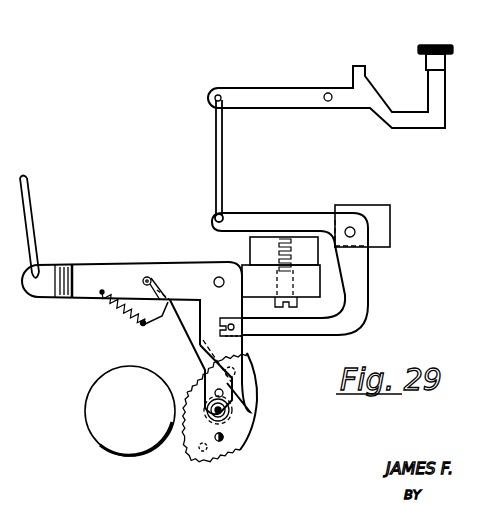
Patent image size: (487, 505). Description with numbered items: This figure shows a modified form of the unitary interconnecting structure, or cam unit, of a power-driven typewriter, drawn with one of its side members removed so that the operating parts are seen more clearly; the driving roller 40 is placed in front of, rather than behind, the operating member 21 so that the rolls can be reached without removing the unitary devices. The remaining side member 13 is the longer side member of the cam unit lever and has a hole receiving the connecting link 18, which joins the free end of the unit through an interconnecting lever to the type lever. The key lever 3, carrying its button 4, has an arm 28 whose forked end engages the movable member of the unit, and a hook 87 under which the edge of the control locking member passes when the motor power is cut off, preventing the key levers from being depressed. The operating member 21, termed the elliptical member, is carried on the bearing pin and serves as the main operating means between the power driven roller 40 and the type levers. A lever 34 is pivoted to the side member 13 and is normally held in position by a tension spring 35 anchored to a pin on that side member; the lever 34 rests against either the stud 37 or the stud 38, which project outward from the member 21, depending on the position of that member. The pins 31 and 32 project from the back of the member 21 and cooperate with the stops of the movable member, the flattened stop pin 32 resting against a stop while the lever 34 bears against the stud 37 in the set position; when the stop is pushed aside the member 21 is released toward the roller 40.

The key lever 3 is at (282, 100).
The button 4 is at (440, 45).
The hook 87 is at (360, 72).
The connecting link 18 is at (225, 161).
The arm 28 is at (386, 285).
The side member 13 is at (112, 275).
The tension spring 35 is at (120, 312).
The lever 34 is at (178, 335).
The operating member 21 is at (192, 435).
The pin 31 is at (236, 368).
The stud 38 is at (224, 395).
The stud 37 is at (224, 440).
The stop pin 32 is at (208, 452).
The roller 40 is at (93, 416).